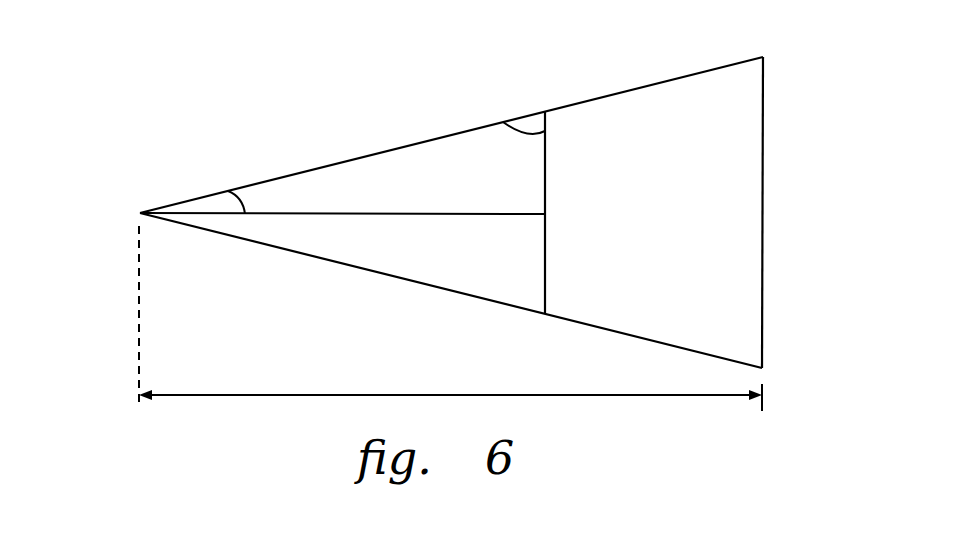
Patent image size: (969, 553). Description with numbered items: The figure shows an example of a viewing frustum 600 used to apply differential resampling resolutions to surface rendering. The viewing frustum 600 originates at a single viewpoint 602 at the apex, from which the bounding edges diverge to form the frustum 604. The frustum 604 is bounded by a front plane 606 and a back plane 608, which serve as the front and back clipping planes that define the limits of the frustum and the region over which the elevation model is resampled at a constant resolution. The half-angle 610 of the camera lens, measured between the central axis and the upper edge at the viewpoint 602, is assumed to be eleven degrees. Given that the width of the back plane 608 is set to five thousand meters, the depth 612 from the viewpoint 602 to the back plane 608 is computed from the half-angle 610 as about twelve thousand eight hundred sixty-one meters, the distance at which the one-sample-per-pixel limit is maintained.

The viewing frustum 600 is at (352, 146).
The viewpoint 602 is at (140, 213).
The frustum 604 is at (667, 107).
The front plane 606 is at (505, 123).
The back plane 608 is at (763, 313).
The half-angle θ 610 is at (226, 194).
The depth 612 is at (275, 397).